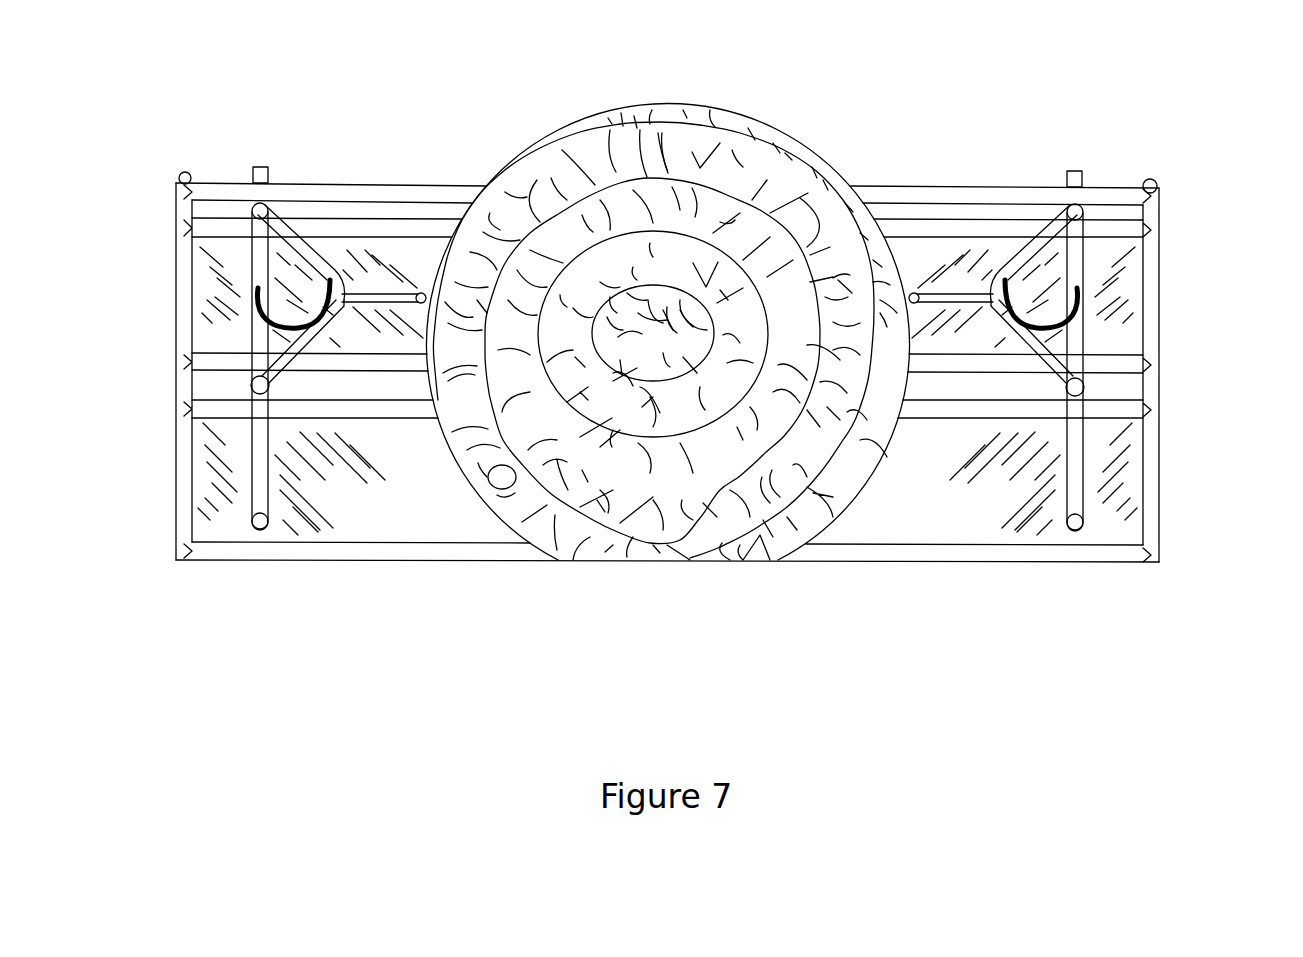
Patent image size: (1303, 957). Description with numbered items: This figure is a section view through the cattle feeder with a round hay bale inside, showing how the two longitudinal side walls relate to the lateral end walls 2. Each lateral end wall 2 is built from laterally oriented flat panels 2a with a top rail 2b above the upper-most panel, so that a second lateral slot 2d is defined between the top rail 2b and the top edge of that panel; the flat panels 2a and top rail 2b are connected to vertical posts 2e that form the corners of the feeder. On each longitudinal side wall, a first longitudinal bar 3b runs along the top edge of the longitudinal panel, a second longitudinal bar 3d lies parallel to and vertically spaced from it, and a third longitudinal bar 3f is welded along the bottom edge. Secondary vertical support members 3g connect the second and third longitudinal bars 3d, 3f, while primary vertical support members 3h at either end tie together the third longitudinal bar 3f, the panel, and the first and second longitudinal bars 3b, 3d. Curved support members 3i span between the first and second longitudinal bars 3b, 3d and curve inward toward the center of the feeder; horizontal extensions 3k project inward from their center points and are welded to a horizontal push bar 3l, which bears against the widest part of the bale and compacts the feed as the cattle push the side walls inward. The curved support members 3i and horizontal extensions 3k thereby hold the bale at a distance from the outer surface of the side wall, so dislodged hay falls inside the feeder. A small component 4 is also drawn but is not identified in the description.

The lateral side wall 2 is at (662, 355).
The laterally oriented flat panel 2a is at (285, 550).
The top rail 2b is at (1103, 200).
The second lateral slot 2d is at (352, 205).
The vertical post 2e is at (172, 543).
The first longitudinal bar 3b is at (250, 385).
The second longitudinal bar 3d is at (252, 210).
The third longitudinal bar 3f is at (255, 527).
The secondary vertical support member 3g is at (262, 460).
The primary vertical support member 3h is at (262, 362).
The curved support member 3i is at (282, 228).
The horizontal extension 3k is at (378, 293).
The horizontal push bar 3l is at (423, 294).
The block 4 is at (255, 170).